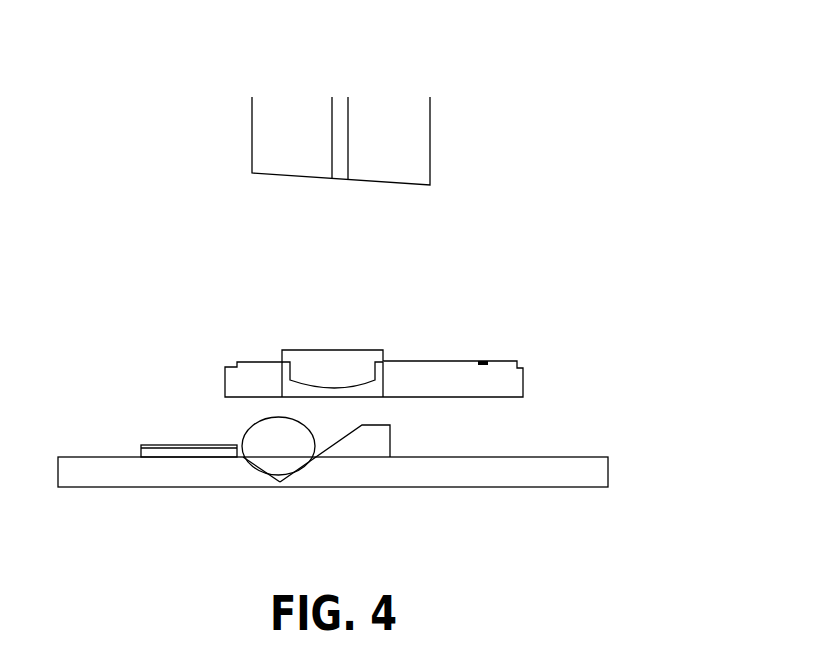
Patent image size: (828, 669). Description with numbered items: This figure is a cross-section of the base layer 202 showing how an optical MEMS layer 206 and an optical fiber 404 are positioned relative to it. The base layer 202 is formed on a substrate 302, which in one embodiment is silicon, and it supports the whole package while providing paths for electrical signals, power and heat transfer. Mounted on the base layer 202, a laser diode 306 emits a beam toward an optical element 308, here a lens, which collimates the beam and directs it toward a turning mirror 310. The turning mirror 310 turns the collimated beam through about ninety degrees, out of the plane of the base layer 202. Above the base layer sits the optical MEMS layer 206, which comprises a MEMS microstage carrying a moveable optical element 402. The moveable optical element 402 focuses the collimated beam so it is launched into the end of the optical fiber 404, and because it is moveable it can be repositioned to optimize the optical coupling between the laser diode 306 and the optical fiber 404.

The optical fiber 404 is at (430, 142).
The optical MEMS layer 206 is at (541, 378).
The moveable optical element 402 is at (350, 358).
The substrate 302 is at (520, 477).
The laser diode 306 is at (192, 452).
The optical element 308 is at (280, 453).
The turning mirror 310 is at (368, 447).
The base layer 202 is at (623, 416).